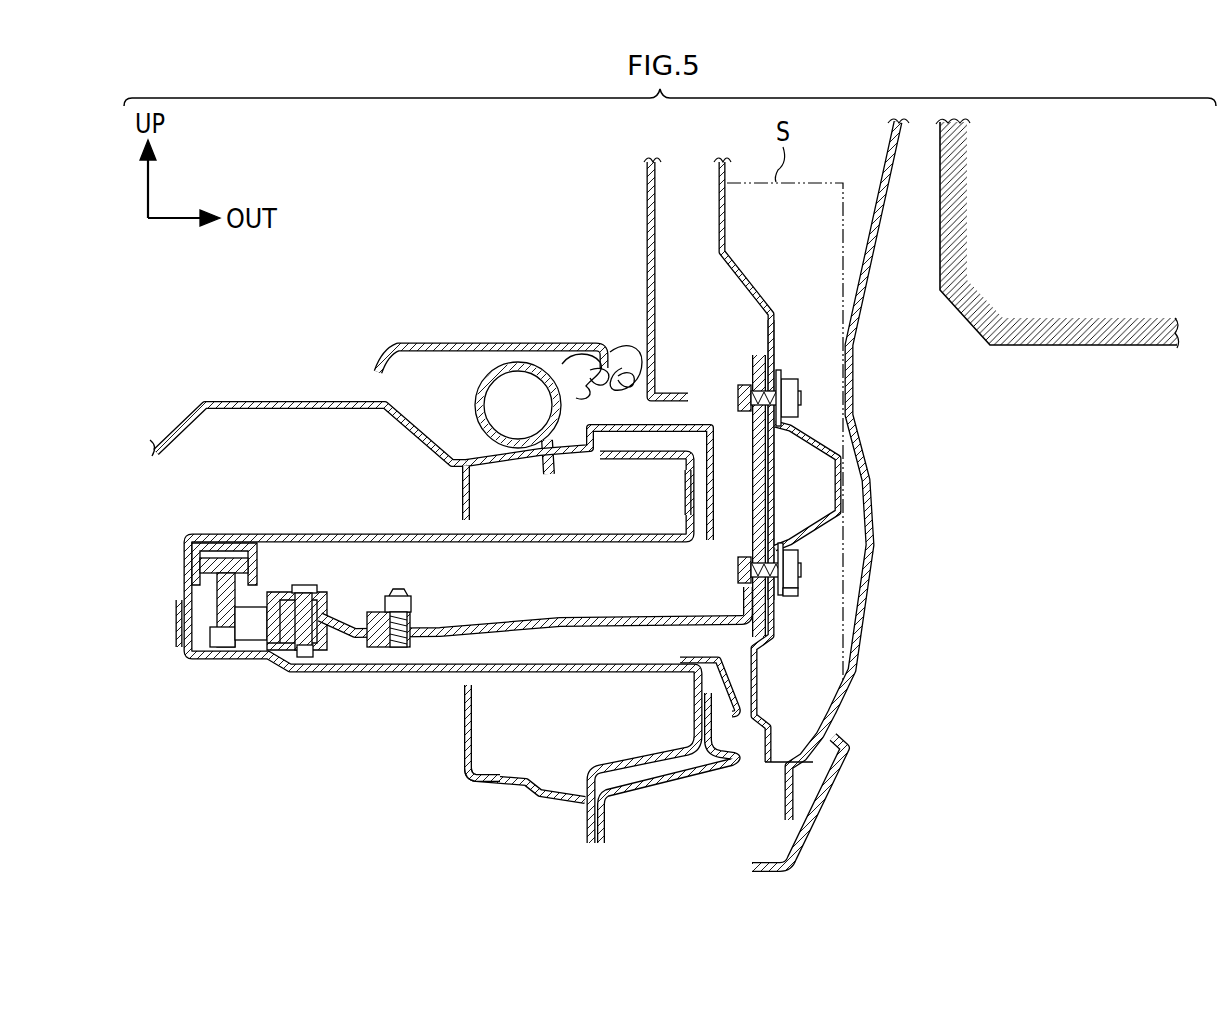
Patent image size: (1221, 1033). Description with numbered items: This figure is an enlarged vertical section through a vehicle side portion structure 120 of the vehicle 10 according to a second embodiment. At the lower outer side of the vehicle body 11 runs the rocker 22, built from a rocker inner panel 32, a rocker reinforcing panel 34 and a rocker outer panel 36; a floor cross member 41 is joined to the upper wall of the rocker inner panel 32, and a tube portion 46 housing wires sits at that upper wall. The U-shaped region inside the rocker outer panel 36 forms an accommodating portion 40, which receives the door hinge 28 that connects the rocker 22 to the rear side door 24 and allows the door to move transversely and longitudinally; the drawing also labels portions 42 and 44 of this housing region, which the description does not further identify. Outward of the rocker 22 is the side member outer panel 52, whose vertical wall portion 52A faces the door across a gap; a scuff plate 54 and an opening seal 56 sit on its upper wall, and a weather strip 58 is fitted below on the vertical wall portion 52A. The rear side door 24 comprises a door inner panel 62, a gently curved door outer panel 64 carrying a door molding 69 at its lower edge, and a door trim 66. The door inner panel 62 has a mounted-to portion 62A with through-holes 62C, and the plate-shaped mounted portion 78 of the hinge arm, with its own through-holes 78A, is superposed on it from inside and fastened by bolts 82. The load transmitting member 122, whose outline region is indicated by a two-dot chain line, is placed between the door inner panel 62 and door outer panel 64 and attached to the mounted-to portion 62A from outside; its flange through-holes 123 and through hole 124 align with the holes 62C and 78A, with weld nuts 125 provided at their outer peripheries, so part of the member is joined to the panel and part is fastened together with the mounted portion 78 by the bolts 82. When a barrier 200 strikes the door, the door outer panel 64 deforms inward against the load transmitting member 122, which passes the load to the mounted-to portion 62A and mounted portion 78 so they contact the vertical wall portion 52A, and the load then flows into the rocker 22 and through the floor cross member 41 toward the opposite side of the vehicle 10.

The vehicle 10 is at (1072, 574).
The vehicle body 11 is at (438, 780).
The rocker 22 is at (524, 803).
The rear side door 24 is at (890, 514).
The door hinge 28 is at (446, 656).
The rocker inner panel 32 is at (476, 792).
The rocker reinforcing panel 34 is at (630, 740).
The rocker outer panel 36 is at (548, 684).
The accommodating portion 40 is at (459, 647).
The floor cross member 41 is at (292, 400).
The upper plate 42 is at (350, 530).
The lower plate 44 is at (336, 682).
The tube portion 46 is at (475, 402).
The side member outer panel 52 is at (588, 782).
The vertical wall portion 52A is at (717, 425).
The scuff plate 54 is at (470, 340).
The opening seal 56 is at (632, 344).
The weather strip 58 is at (738, 651).
The door inner panel 62 is at (712, 185).
The mounted-to portion 62A is at (767, 342).
The through-holes 62C is at (754, 400).
The door outer panel 64 is at (872, 454).
The door trim 66 is at (646, 203).
The door molding 69 is at (828, 814).
The mounted portion 78 is at (754, 465).
The through-holes 78A is at (705, 470).
The bolts 82 is at (796, 483).
The vehicle side portion structure 120 is at (934, 618).
The load transmitting member 122 is at (832, 438).
The through-holes 123 is at (798, 394).
The through hole 124 is at (790, 588).
The weld nuts 125 is at (782, 372).
The barrier 200 is at (1106, 346).